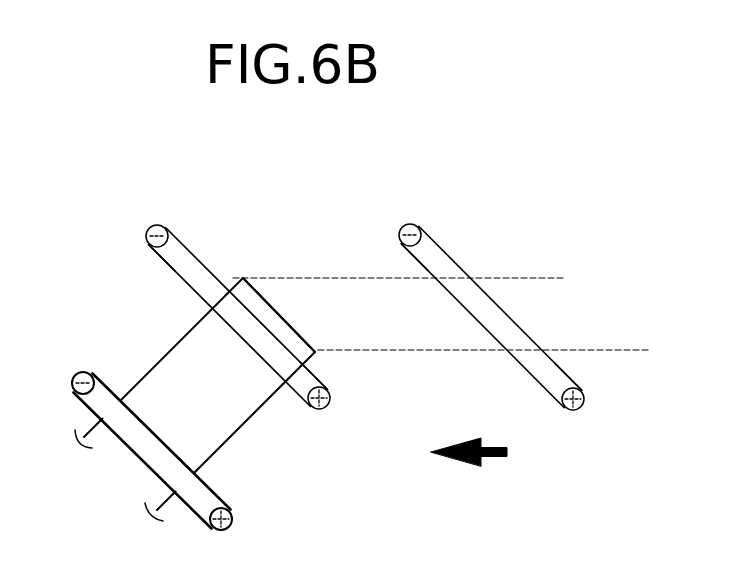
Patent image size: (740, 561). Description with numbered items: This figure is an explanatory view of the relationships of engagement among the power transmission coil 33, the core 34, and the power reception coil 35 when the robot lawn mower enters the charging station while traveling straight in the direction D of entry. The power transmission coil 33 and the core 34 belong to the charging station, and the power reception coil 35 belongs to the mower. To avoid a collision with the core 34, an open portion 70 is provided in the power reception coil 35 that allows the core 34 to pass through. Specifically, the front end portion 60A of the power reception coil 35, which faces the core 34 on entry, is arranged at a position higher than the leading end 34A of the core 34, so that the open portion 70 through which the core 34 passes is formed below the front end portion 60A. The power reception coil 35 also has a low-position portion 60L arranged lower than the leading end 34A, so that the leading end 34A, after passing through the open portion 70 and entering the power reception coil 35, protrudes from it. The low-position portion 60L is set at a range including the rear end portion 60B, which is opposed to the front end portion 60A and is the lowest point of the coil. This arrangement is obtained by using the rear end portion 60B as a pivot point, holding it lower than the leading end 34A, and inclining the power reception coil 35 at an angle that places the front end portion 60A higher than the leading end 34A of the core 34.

The power transmission coil 33 is at (216, 495).
The core 34 is at (151, 392).
The leading end of the core 34A is at (279, 312).
The power reception coil 35 is at (293, 400).
The front end portion 60A is at (168, 225).
The rear end portion 60B is at (330, 399).
The low-position portion 60L is at (338, 381).
The open portion 70 is at (137, 264).
The direction of entry D is at (493, 459).